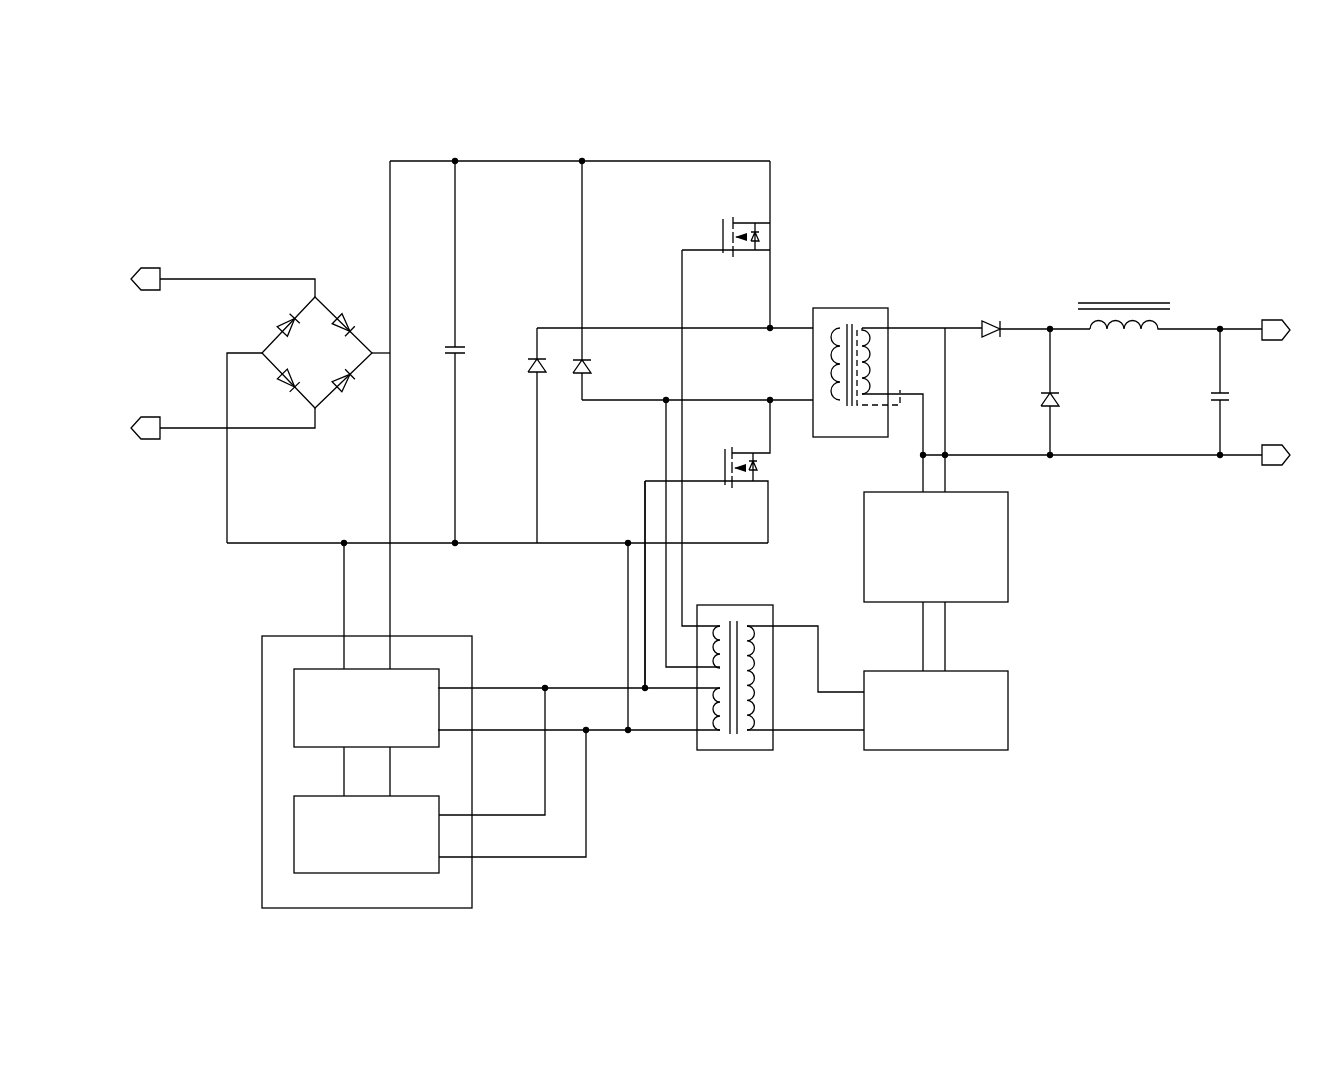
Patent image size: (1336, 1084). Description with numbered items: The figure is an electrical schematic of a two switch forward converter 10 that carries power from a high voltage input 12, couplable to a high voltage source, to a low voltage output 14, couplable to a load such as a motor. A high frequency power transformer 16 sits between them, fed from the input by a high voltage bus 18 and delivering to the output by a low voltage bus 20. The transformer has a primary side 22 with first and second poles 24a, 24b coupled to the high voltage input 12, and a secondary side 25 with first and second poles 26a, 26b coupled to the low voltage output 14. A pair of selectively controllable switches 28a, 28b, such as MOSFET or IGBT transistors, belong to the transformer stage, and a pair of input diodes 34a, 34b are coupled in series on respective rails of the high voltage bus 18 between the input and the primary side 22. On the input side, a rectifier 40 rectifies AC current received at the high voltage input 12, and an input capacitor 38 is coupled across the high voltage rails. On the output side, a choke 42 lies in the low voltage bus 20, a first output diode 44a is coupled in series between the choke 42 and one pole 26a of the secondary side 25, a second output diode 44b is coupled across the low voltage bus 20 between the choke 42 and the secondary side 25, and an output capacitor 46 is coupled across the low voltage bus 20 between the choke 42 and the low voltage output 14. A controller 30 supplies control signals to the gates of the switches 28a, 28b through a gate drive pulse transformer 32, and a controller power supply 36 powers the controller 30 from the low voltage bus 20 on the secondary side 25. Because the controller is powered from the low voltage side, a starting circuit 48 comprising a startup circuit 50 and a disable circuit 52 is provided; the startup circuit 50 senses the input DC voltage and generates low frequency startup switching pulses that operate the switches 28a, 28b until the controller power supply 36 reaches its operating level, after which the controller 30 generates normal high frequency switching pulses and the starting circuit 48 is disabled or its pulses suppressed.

The two switch forward converter 10 is at (895, 157).
The high voltage input 12 is at (146, 291).
The low voltage output 14 is at (1276, 341).
The high frequency power transformer 16 is at (862, 250).
The high voltage bus 18 is at (256, 172).
The low voltage bus 20 is at (1150, 464).
The primary side 22 is at (840, 318).
The first pole 24a is at (792, 329).
The second pole 24b is at (792, 400).
The secondary side 25 is at (865, 314).
The first pole 26a is at (904, 329).
The second pole 26b is at (908, 394).
The selectively controllable switch 28a is at (782, 232).
The selectively controllable switch 28b is at (778, 468).
The controller 30 is at (1008, 690).
The gate drive pulse transformer 32 is at (773, 742).
The input diode 34a is at (530, 372).
The input diode 34b is at (591, 362).
The controller power supply 36 is at (1008, 535).
The input capacitor 38 is at (466, 345).
The rectifier 40 is at (357, 422).
The choke 42 is at (1128, 279).
The first output diode 44a is at (988, 327).
The second output diode 44b is at (1040, 394).
The output capacitor 46 is at (1213, 393).
The starting circuit 48 is at (262, 770).
The startup circuit 50 is at (294, 710).
The disable circuit 52 is at (294, 828).